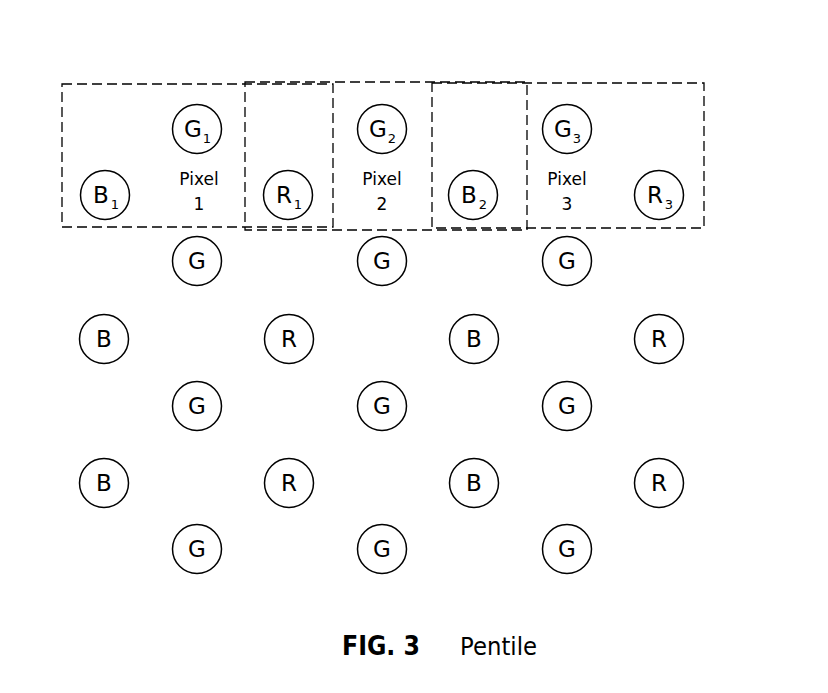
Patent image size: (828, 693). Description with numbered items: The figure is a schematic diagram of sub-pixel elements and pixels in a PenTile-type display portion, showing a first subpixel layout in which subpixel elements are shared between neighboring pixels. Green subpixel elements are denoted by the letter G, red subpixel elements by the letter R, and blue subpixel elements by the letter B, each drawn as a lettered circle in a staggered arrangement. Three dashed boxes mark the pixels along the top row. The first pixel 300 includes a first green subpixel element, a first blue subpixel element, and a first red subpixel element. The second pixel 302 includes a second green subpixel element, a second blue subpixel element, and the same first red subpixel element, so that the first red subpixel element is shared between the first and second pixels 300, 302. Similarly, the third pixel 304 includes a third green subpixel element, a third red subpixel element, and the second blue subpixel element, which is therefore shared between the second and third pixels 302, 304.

The first pixel 300 is at (97, 85).
The second pixel 302 is at (318, 83).
The third pixel 304 is at (643, 85).